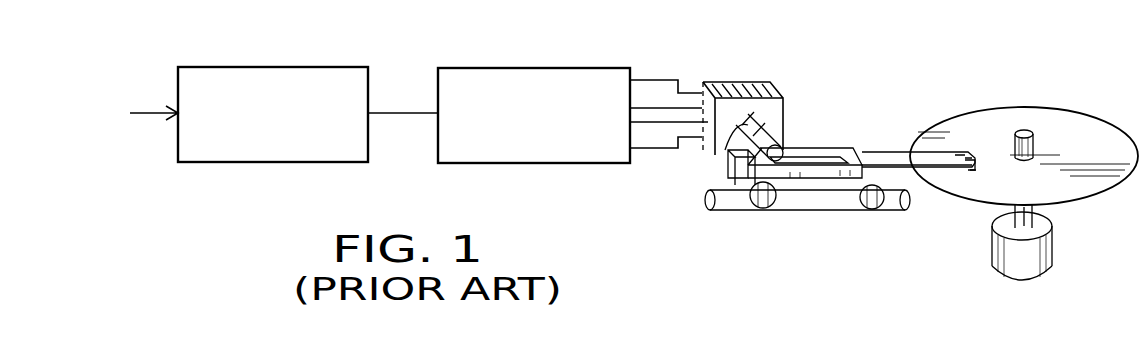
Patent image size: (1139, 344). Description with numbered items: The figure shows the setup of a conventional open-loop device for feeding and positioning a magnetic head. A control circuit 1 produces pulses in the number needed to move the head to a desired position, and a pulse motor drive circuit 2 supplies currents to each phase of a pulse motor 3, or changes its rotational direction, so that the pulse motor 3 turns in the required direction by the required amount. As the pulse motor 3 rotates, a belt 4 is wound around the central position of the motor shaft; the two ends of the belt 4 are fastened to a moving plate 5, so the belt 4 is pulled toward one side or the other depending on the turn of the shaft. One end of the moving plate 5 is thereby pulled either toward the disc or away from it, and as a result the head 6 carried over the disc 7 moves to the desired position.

The control circuit 1 is at (276, 67).
The pulse motor drive circuit 2 is at (532, 68).
The pulse motor 3 is at (735, 82).
The belt 4 is at (727, 154).
The moving plate 5 is at (735, 176).
The head 6 is at (962, 171).
The disc 7 is at (1015, 107).